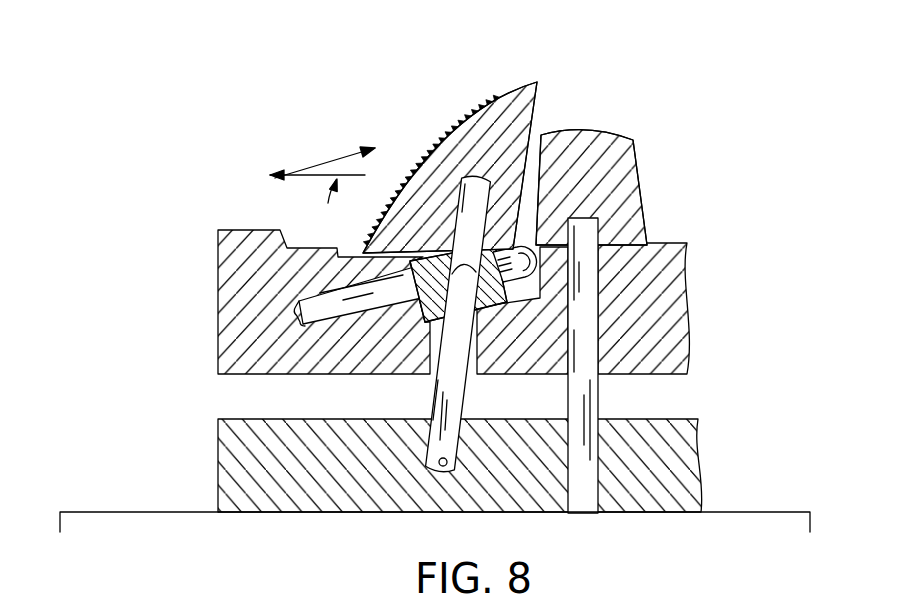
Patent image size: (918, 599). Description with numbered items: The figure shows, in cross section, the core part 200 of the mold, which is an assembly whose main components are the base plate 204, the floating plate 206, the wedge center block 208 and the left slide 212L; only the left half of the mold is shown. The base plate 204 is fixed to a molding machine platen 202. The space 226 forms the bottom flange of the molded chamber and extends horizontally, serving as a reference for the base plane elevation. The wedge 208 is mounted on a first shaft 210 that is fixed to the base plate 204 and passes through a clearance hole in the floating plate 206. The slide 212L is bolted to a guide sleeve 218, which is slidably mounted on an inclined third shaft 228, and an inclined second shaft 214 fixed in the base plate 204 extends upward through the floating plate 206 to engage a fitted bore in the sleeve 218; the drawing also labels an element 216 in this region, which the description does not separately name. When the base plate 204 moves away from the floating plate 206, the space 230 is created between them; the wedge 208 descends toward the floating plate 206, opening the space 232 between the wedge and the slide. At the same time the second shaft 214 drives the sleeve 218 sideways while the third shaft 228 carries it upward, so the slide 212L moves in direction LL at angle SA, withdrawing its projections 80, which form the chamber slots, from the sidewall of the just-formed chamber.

The core part 200 is at (188, 187).
The molding machine platen 202 is at (192, 510).
The base plate 204 is at (702, 470).
The floating plate 206 is at (692, 298).
The wedge center block 208 is at (633, 140).
The first shaft 210 is at (598, 403).
The left slide 212L is at (516, 92).
The inclined second shaft 214 is at (430, 404).
The rod 216 is at (471, 178).
The guide sleeve 218 is at (500, 297).
The space 226 is at (357, 253).
The third shaft 228 is at (310, 318).
The space 230 is at (210, 390).
The space 232 is at (545, 121).
The projections 80 is at (422, 153).